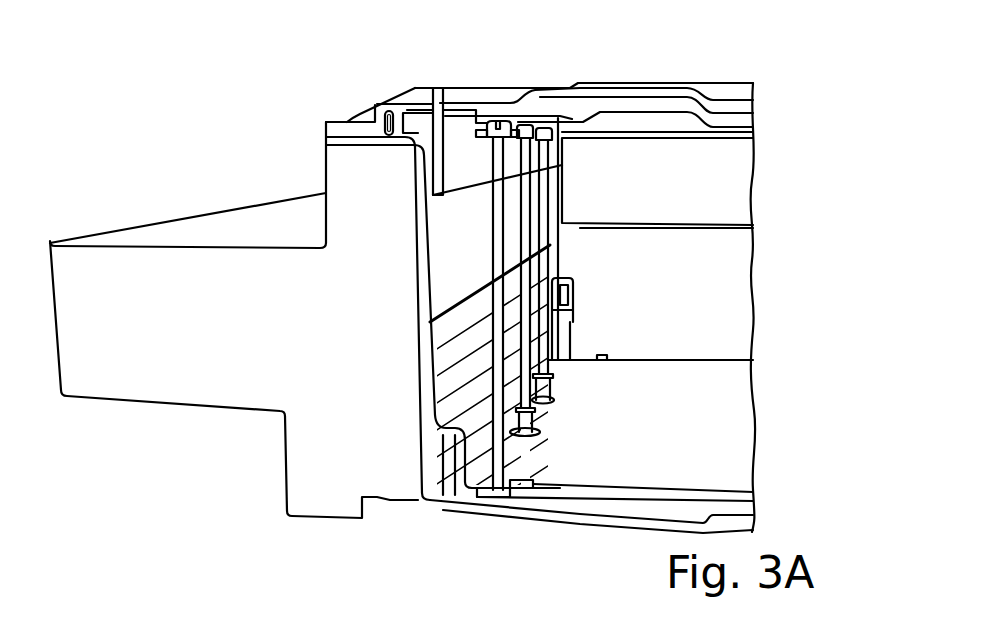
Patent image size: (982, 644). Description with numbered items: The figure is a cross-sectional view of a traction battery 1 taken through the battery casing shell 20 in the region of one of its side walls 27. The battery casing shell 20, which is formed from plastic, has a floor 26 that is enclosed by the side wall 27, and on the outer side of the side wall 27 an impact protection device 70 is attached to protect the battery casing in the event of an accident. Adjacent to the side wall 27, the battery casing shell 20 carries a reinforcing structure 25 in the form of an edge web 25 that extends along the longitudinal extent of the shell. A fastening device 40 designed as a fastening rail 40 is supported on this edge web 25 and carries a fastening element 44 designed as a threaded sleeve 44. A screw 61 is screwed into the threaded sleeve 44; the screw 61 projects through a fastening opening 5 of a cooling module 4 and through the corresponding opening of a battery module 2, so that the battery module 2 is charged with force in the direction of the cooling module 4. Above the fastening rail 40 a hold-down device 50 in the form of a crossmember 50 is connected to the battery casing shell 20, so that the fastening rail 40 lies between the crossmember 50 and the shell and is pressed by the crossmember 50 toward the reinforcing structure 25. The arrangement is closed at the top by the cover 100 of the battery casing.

The traction battery 1 is at (245, 100).
The battery module 2 is at (733, 182).
The cooling module 4 is at (738, 488).
The fastening opening 5 is at (553, 398).
The battery casing shell 20 is at (722, 508).
The reinforcing structure 25 is at (448, 478).
The floor 26 is at (630, 523).
The side wall 27 is at (452, 210).
The fastening device 40 is at (452, 357).
The fastening element 44 is at (533, 420).
The hold-down device 50 is at (738, 287).
The screw 61 is at (497, 167).
The impact protection device 70 is at (243, 227).
The cover 100 is at (547, 91).